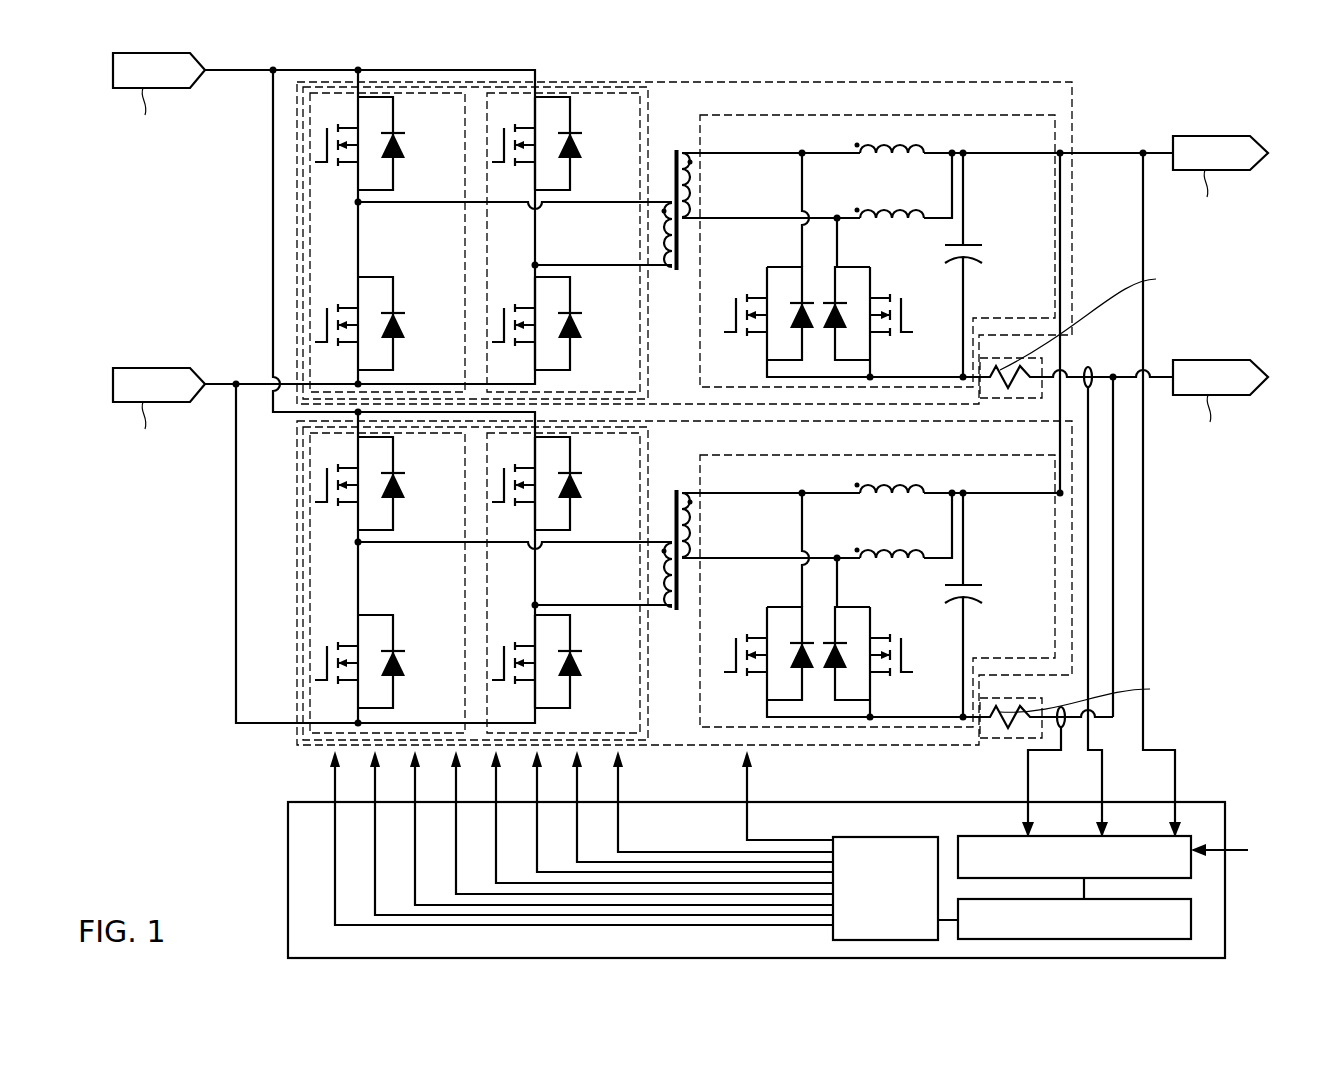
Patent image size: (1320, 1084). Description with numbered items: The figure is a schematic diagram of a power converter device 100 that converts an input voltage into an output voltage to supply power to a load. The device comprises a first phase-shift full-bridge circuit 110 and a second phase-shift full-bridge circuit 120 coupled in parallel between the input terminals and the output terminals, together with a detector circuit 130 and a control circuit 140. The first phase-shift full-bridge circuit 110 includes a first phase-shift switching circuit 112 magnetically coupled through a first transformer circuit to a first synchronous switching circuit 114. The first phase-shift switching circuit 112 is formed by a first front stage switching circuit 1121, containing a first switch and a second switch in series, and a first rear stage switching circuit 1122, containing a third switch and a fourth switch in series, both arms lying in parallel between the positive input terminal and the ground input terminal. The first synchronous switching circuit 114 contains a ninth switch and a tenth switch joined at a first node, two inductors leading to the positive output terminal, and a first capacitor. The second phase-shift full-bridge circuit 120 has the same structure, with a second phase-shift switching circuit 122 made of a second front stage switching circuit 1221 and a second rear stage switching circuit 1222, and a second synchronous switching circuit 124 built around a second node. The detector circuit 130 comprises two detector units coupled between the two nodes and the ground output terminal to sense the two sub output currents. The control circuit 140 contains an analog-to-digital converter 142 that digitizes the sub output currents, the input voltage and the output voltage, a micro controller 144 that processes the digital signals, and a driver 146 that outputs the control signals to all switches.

The power converter device 100 is at (1319, 79).
The first phase-shift full-bridge circuit 110 is at (297, 207).
The first phase-shift switching circuit 112 is at (303, 165).
The first front stage switching circuit 1121 is at (310, 125).
The first rear stage switching circuit 1122 is at (612, 92).
The first synchronous switching circuit 114 is at (738, 112).
The second phase-shift full-bridge circuit 120 is at (297, 564).
The second phase-shift switching circuit 122 is at (303, 521).
The second front stage switching circuit 1221 is at (310, 482).
The second rear stage switching circuit 1222 is at (486, 573).
The second synchronous switching circuit 124 is at (1055, 548).
The detector circuit 130 is at (1037, 357).
The control circuit 140 is at (288, 877).
The analog-to-digital converter 142 is at (1191, 868).
The micro controller 144 is at (1191, 921).
The driver 146 is at (833, 938).